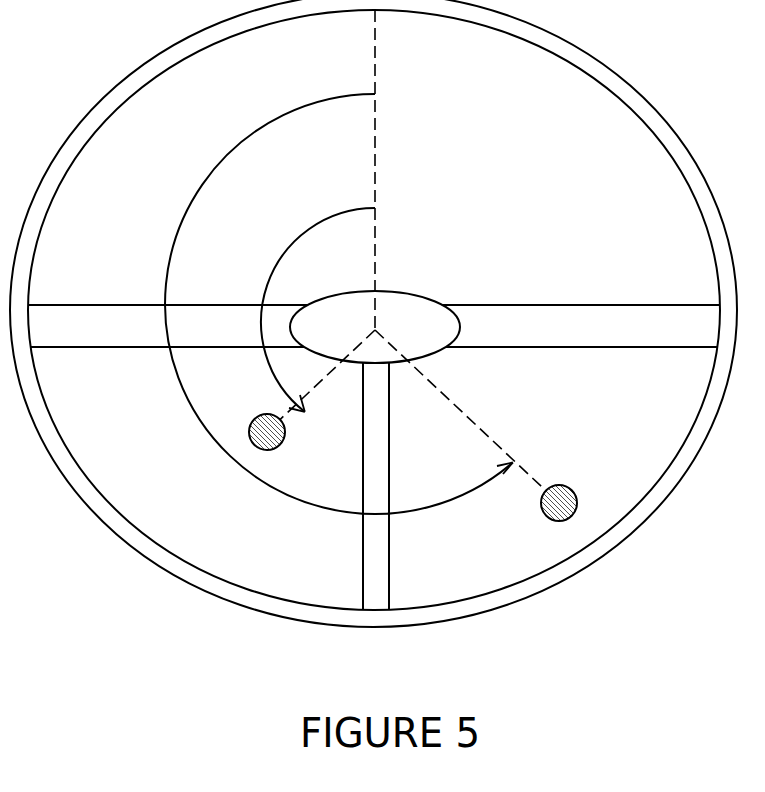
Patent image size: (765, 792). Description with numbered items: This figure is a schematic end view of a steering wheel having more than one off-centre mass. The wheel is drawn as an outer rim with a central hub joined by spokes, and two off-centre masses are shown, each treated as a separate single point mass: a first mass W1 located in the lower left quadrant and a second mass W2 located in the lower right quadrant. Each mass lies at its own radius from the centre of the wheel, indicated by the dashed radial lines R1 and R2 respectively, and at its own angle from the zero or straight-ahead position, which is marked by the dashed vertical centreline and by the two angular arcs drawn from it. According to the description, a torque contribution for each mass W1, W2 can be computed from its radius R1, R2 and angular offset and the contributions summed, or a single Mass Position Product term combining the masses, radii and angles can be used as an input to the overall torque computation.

The radial distance of first mass R1 is at (327, 377).
The radial distance of second mass R2 is at (460, 410).
The first off-centre mass W1 is at (289, 442).
The second off-centre mass W2 is at (570, 488).